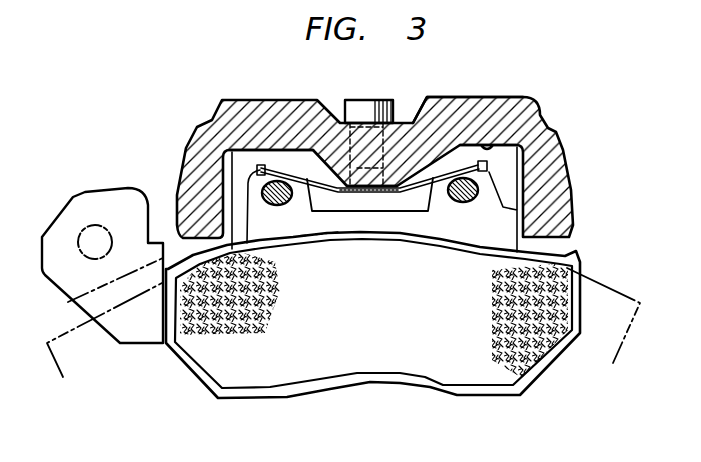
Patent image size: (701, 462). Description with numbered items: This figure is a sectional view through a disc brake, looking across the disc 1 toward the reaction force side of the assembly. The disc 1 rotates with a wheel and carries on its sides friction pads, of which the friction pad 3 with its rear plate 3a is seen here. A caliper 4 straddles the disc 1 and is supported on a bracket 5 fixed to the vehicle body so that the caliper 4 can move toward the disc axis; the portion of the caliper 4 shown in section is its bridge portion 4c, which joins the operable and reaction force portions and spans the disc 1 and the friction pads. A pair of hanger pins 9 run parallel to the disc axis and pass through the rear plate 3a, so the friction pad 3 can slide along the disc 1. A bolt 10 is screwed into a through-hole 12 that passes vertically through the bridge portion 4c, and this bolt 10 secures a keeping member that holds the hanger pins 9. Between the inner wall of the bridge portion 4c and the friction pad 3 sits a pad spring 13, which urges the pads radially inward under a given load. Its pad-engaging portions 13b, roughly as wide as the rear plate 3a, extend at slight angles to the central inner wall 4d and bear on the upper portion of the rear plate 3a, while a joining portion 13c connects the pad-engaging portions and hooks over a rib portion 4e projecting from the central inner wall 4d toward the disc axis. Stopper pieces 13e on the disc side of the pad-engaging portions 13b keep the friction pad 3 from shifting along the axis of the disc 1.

The disc 1 is at (618, 280).
The friction pad 3 is at (421, 398).
The rear plate 3a is at (535, 372).
The caliper 4 is at (562, 124).
The bridge portion 4c is at (432, 103).
The central inner wall 4d is at (258, 157).
The rib portion 4e is at (363, 190).
The bracket 5 is at (86, 186).
The hanger pin 9 is at (273, 206).
The bolt 10 is at (358, 100).
The through-hole 12 is at (336, 122).
The pad spring 13 is at (390, 192).
The pad-engaging portion 13b is at (450, 164).
The joining portion 13c is at (372, 190).
The stopper piece 13e is at (262, 163).